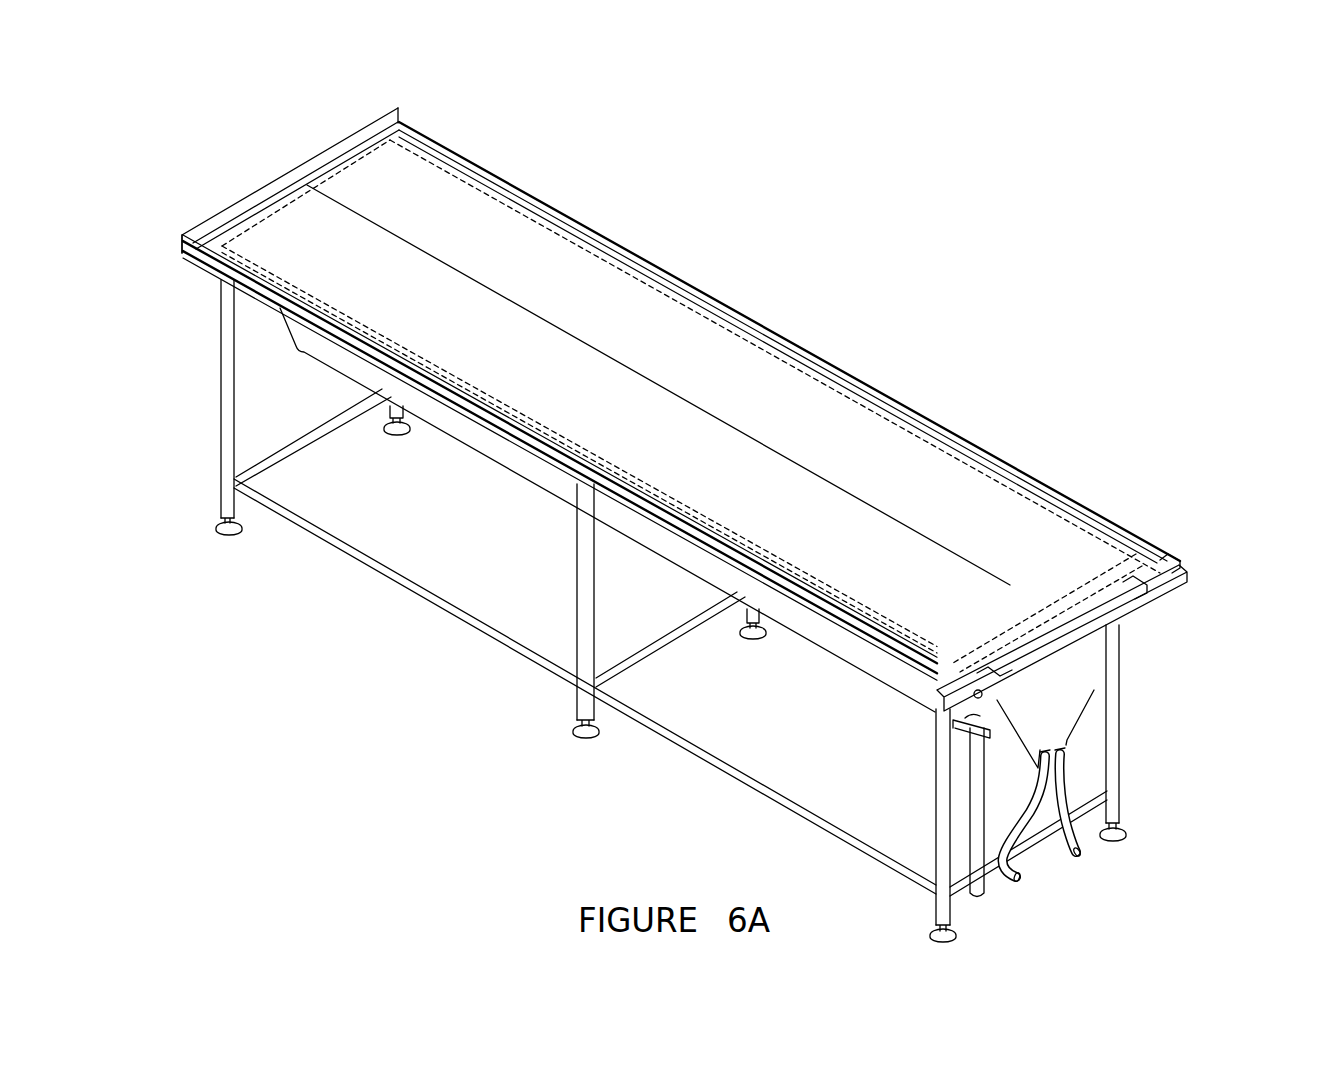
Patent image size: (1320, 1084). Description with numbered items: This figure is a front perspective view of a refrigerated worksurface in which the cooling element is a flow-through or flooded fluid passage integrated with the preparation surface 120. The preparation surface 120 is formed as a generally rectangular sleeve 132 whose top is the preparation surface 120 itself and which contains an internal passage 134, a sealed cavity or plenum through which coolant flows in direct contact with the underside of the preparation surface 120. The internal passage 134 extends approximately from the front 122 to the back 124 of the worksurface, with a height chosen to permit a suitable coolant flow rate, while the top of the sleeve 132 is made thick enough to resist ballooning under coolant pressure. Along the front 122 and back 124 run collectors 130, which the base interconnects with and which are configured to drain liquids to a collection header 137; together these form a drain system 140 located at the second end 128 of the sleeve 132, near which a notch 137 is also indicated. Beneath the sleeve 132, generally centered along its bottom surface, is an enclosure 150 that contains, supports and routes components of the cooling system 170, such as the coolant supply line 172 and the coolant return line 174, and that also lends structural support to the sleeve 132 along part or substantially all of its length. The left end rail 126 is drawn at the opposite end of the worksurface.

The preparation surface 120 is at (550, 245).
The front 122 is at (250, 330).
The back 124 is at (700, 248).
The left end rail 126 is at (282, 157).
The second end 128 is at (1172, 614).
The collectors 130 is at (184, 251).
The sleeve 132 is at (465, 202).
The internal passage 134 is at (272, 217).
The collection header 137 is at (1170, 566).
The drain system 140 is at (955, 771).
The enclosure 150 is at (1080, 680).
The cooling system 170 is at (1100, 849).
The coolant supply line 172 is at (1012, 885).
The coolant return line 174 is at (1078, 859).